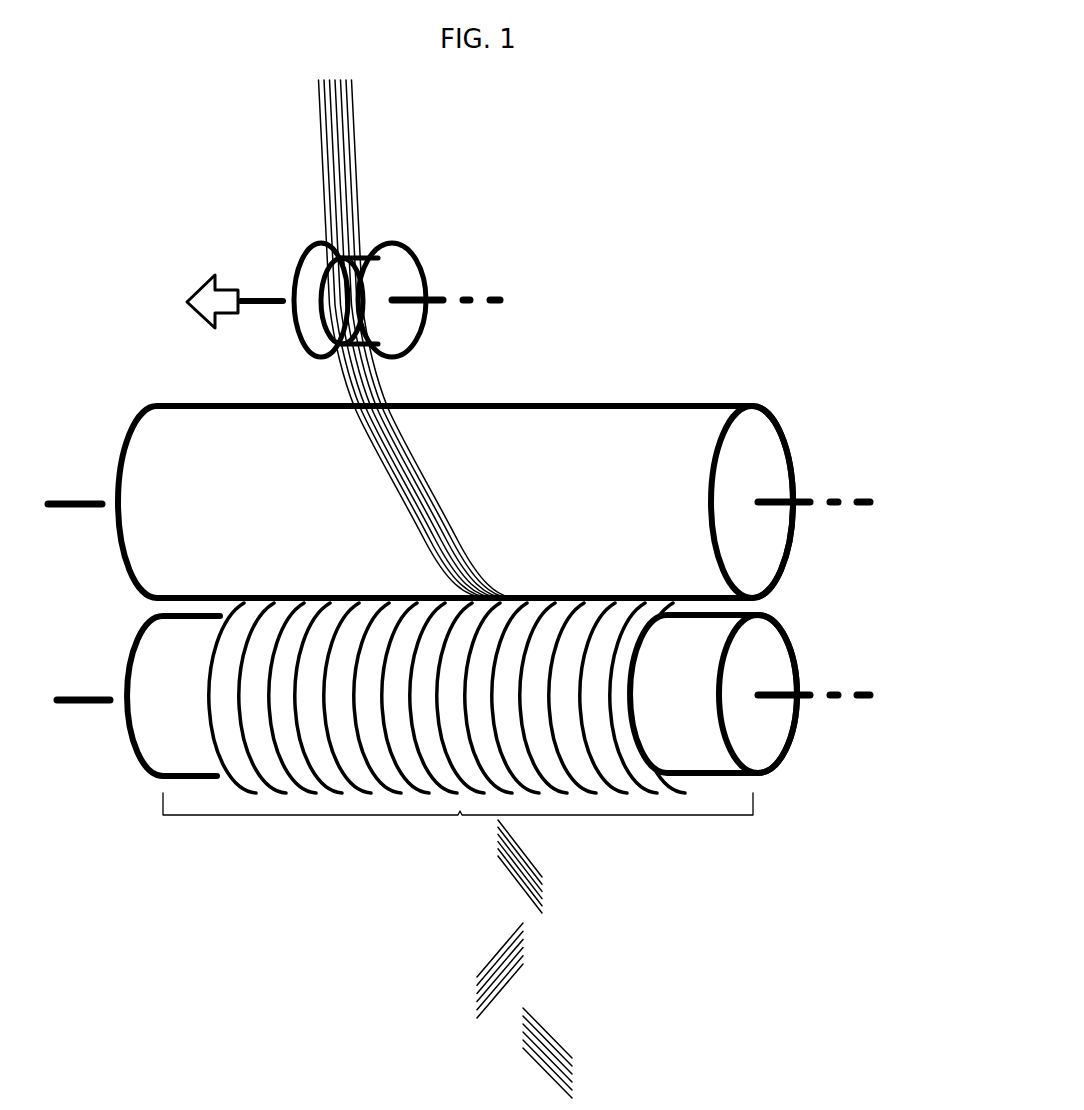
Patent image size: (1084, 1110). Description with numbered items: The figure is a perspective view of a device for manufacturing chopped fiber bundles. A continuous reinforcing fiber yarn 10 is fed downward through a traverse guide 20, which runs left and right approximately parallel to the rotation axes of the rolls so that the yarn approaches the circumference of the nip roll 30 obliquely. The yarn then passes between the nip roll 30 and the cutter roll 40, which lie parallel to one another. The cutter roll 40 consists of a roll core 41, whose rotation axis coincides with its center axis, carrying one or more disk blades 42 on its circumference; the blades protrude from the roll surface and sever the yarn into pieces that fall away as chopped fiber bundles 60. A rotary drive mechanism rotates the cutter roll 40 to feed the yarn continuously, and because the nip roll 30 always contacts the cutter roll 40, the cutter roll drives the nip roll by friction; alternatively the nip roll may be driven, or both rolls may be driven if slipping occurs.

The reinforcing fiber yarn 10 is at (322, 165).
The traverse guide 20 is at (402, 282).
The nip roll 30 is at (172, 513).
The cutter roll 40 is at (460, 815).
The roll core 41 is at (760, 663).
The disk blade 42 is at (367, 793).
The chopped fiber bundle 60 is at (532, 877).